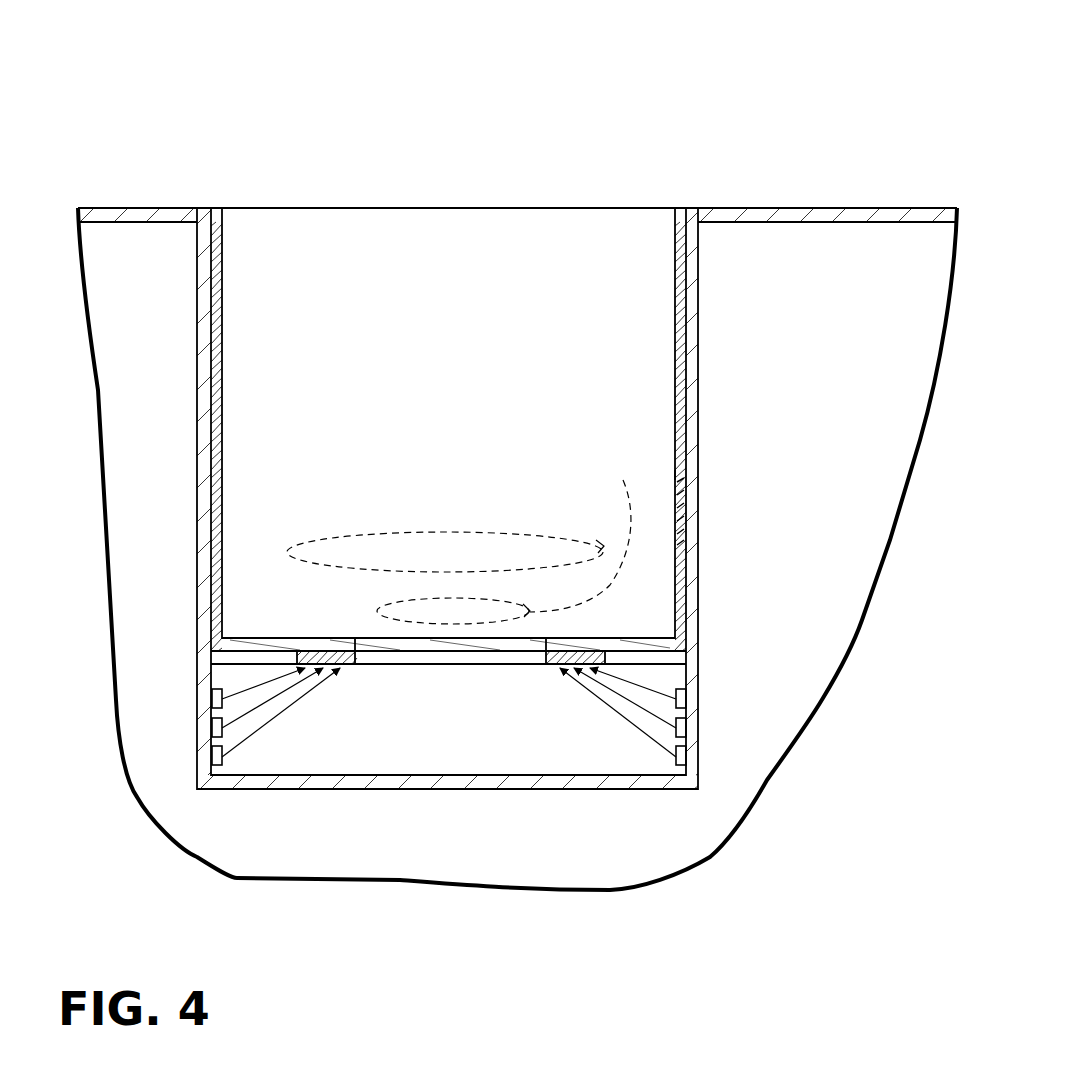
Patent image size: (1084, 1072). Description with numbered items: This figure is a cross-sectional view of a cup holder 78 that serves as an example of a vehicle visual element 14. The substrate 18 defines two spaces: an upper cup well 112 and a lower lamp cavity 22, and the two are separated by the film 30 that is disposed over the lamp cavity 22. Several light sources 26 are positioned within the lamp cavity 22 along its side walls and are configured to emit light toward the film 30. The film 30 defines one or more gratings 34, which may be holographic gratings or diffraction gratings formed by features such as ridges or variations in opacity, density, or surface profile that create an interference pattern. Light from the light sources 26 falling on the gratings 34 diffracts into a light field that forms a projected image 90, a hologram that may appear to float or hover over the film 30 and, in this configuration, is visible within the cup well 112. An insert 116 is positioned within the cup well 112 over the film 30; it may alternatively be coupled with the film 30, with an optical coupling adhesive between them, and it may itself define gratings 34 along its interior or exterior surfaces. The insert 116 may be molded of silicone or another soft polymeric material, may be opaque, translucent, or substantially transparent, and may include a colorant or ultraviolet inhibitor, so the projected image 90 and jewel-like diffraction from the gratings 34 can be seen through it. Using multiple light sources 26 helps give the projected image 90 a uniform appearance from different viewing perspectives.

The vehicle visual element 14 is at (331, 140).
The substrate 18 is at (784, 208).
The cup holder 78 is at (530, 260).
The cup well 112 is at (455, 403).
The projected image 90 is at (460, 540).
The film 30 is at (423, 658).
The grating 34 is at (685, 522).
The light source 26 is at (686, 699).
The insert 116 is at (685, 474).
The lamp cavity 22 is at (478, 740).